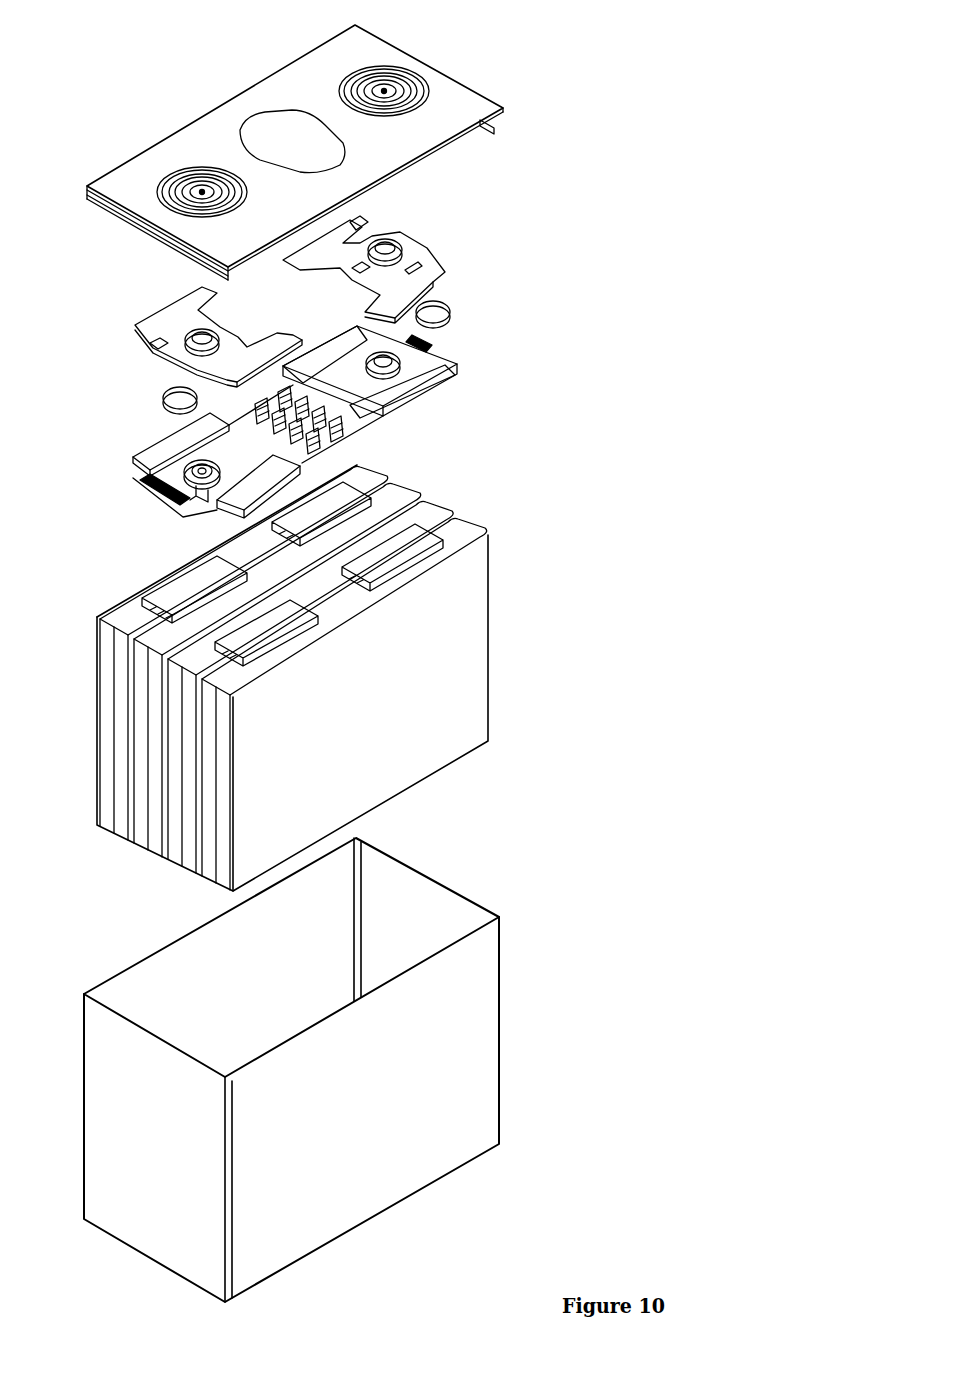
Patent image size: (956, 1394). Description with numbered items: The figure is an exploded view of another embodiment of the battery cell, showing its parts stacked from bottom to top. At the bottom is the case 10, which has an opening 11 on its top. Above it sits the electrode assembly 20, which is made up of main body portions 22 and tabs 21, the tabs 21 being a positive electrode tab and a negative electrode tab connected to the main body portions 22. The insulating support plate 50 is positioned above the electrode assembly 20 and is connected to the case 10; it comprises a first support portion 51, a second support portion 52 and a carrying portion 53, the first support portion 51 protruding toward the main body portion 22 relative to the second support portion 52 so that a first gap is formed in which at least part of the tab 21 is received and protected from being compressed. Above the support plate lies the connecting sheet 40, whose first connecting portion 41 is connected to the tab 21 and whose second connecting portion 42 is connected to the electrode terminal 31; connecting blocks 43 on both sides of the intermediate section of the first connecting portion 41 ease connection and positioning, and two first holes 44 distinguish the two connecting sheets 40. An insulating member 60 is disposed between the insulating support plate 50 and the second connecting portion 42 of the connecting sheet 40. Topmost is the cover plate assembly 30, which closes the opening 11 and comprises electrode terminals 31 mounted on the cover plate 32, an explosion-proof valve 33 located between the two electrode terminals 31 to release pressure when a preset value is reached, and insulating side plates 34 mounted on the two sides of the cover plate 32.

The case 10 is at (317, 1065).
The opening 11 is at (408, 887).
The electrode assembly 20 is at (313, 665).
The tab 21 is at (165, 597).
The main body portion 22 is at (475, 667).
The cover plate assembly 30 is at (315, 141).
The electrode terminal 31 is at (362, 70).
The cover plate 32 is at (300, 70).
The explosion-proof valve 33 is at (262, 128).
The insulating side plate 34 is at (494, 129).
The connecting sheet 40 is at (303, 286).
The first connecting portion 41 is at (168, 310).
The second connecting portion 42 is at (205, 332).
The connecting block 43 is at (158, 347).
The first hole 44 is at (357, 227).
The insulating support plate 50 is at (310, 431).
The first support portion 51 is at (133, 480).
The second support portion 52 is at (160, 453).
The carrying portion 53 is at (190, 498).
The insulating member 60 is at (440, 307).